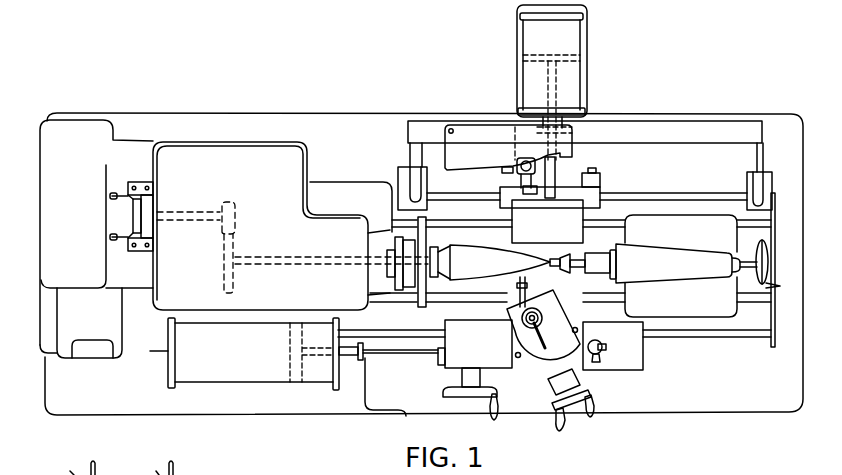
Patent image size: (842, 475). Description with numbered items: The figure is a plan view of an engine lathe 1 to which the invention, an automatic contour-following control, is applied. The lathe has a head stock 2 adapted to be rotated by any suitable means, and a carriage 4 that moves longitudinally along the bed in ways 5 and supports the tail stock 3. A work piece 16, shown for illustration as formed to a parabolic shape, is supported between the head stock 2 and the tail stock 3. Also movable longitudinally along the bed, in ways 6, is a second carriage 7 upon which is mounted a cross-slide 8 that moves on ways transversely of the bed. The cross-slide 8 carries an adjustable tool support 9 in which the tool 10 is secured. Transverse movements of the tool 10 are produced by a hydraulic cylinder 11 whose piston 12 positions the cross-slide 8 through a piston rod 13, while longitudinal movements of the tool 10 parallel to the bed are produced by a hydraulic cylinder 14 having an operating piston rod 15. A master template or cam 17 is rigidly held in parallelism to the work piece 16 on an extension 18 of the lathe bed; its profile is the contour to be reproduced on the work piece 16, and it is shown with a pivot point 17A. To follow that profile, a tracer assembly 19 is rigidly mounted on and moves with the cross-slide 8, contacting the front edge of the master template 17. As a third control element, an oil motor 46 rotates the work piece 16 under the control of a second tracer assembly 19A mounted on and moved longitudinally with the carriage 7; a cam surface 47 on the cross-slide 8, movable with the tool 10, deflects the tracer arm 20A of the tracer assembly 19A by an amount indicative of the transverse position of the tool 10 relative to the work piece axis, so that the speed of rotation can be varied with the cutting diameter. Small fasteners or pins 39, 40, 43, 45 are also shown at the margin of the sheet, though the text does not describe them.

The engine lathe 1 is at (154, 112).
The head stock 2 is at (420, 307).
The tail stock 3 is at (592, 270).
The carriage 4 is at (721, 311).
The ways 5 is at (773, 228).
The ways 6 is at (680, 197).
The carriage 7 is at (484, 354).
The cross-slide 8 is at (556, 230).
The adjustable tool support 9 is at (562, 374).
The tool 10 is at (518, 283).
The hydraulic cylinder 11 is at (562, 46).
The piston 12 is at (537, 66).
The piston rod 13 is at (556, 169).
The hydraulic cylinder 14 is at (248, 369).
The operating piston rod 15 is at (418, 360).
The work piece 16 is at (490, 262).
The master template 17 is at (491, 155).
The cam plate pivot 17A is at (451, 128).
The extension 18 is at (692, 145).
The tracer assembly 19 is at (506, 180).
The tracer assembly 19A is at (597, 342).
The tracer arm 20A is at (601, 352).
The fastener 39 is at (59, 465).
The fastener 40 is at (146, 466).
The pin 43 is at (176, 467).
The pin 45 is at (97, 467).
The oil motor 46 is at (143, 180).
The cam surface 47 is at (596, 363).